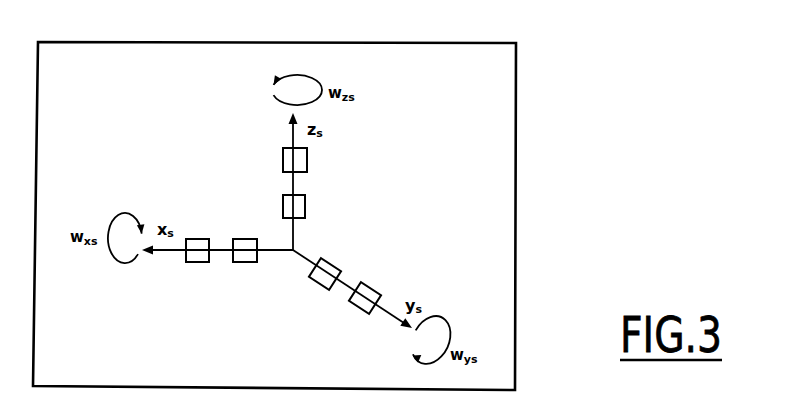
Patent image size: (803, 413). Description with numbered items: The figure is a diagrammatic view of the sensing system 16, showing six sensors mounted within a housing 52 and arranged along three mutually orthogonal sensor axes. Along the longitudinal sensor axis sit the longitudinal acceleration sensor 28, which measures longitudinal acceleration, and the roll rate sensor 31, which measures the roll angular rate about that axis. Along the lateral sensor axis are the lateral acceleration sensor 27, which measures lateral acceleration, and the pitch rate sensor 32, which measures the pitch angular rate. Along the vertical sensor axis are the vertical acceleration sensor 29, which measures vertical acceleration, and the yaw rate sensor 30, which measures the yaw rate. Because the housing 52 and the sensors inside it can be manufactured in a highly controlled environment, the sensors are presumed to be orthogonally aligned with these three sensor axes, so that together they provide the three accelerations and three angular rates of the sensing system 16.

The sensing system 16 is at (642, 112).
The lateral acceleration sensor 27 is at (332, 262).
The longitudinal acceleration sensor 28 is at (247, 237).
The vertical acceleration sensor 29 is at (305, 206).
The yaw rate sensor 30 is at (307, 160).
The roll rate sensor 31 is at (199, 237).
The pitch rate sensor 32 is at (373, 290).
The housing 52 is at (516, 95).